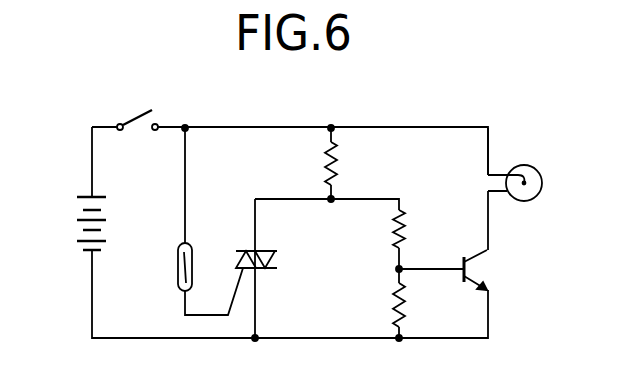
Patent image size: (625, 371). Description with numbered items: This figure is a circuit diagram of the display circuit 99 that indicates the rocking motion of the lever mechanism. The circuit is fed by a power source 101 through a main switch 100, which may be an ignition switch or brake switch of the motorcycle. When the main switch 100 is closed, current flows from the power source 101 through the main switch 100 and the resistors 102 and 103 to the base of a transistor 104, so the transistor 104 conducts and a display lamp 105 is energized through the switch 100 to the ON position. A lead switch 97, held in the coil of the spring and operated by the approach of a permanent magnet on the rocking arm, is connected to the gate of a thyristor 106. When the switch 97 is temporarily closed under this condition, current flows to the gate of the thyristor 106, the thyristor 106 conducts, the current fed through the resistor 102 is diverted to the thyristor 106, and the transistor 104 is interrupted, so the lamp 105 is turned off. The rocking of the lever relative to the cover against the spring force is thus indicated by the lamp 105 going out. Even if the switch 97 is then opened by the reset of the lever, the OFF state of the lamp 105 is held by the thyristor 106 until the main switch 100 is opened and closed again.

The lead switch 97 is at (192, 249).
The display circuit 99 is at (427, 122).
The main switch 100 is at (146, 113).
The power source 101 is at (91, 195).
The resistor 102 is at (335, 153).
The resistor 103 is at (402, 221).
The transistor 104 is at (486, 270).
The display lamp 105 is at (542, 178).
The thyristor 106 is at (259, 252).